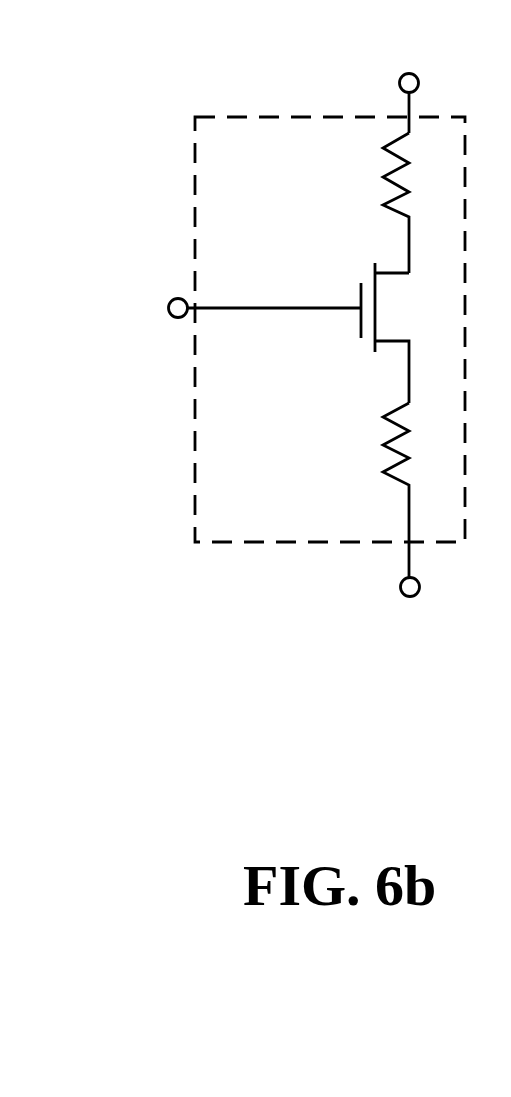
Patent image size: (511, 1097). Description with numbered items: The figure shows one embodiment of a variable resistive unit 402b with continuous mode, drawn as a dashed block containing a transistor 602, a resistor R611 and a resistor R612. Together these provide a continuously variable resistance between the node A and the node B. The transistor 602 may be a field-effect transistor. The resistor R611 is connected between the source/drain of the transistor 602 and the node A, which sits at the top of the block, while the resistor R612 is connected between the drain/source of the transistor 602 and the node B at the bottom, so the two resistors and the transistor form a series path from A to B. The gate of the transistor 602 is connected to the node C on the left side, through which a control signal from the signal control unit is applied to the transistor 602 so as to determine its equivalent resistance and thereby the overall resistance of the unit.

The variable resistive unit 402b is at (200, 543).
The transistor 602 is at (340, 331).
The resistor R611 is at (340, 203).
The resistor R612 is at (342, 490).
The node A is at (396, 77).
The node B is at (397, 580).
The node C is at (165, 306).